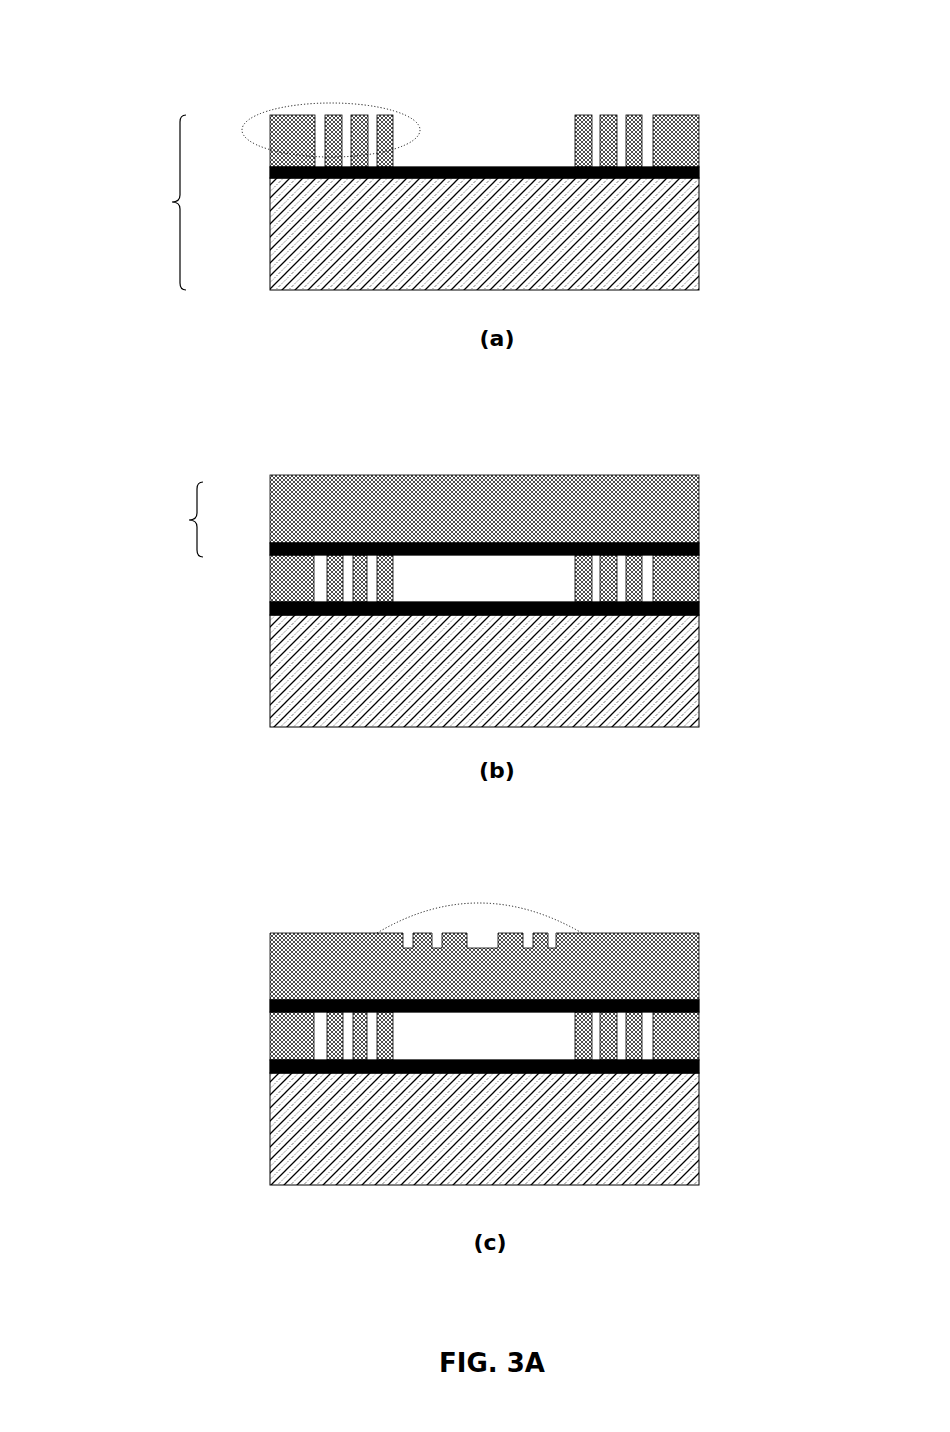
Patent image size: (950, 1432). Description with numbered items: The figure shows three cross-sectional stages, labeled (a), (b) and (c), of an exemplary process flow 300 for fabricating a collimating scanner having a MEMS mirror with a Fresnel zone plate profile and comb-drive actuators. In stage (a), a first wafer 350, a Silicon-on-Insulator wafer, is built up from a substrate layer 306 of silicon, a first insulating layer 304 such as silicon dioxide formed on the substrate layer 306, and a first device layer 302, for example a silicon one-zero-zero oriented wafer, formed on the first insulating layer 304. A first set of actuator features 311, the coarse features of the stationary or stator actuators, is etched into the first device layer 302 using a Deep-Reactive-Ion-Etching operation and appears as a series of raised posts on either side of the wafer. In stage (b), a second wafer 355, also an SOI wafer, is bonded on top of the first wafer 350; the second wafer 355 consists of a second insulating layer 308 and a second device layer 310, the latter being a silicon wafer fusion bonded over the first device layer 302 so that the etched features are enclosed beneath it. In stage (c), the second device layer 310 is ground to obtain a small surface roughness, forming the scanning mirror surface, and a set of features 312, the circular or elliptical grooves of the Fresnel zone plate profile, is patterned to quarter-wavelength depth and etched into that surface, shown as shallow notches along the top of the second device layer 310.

The process flow 300 is at (60, 42).
The first device layer 302 is at (699, 142).
The first insulating layer 304 is at (270, 168).
The substrate layer 306 is at (699, 236).
The second insulating layer 308 is at (270, 544).
The second device layer 310 is at (699, 513).
The first set of actuator features 311 is at (390, 109).
The set of features 312 is at (540, 908).
The first wafer 350 is at (154, 202).
The second wafer 355 is at (171, 519).